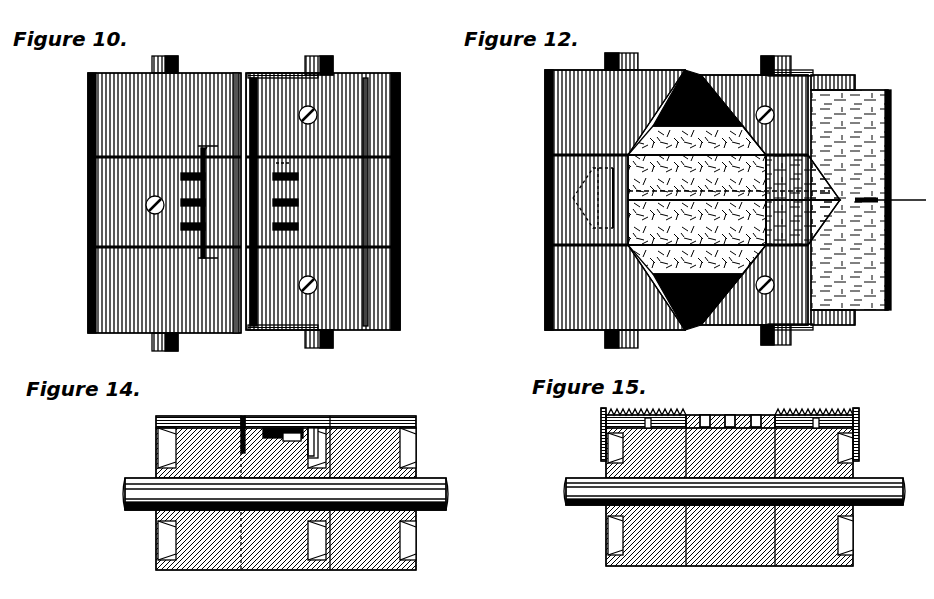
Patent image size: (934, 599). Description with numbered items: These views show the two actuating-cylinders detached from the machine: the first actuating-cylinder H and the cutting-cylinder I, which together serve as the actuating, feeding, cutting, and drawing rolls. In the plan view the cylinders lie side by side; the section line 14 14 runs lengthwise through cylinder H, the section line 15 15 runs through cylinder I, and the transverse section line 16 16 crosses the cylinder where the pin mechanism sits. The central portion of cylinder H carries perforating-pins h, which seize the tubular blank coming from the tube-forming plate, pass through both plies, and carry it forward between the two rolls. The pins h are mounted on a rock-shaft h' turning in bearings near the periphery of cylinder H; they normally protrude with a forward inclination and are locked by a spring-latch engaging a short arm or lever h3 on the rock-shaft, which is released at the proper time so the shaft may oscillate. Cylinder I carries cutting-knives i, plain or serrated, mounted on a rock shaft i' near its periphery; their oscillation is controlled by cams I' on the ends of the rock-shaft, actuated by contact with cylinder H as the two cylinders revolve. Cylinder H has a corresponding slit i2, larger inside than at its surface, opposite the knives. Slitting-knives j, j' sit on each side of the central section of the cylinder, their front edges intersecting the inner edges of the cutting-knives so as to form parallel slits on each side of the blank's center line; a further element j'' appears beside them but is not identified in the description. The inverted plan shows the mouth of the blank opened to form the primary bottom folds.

In FIG. 10, the first actuating-cylinder H is at (164, 203).
In FIG. 12, the first actuating-cylinder H is at (523, 207).
In FIG. 14, the first actuating-cylinder H is at (286, 493).
In FIG. 10, the perforating-pins h is at (176, 202).
In FIG. 12, the perforating-pins h is at (594, 118).
In FIG. 14, the perforating-pins h is at (286, 414).
In FIG. 14, the rock-shaft h' is at (324, 422).
In FIG. 14, the short arm or lever h3 is at (260, 432).
In FIG. 10, the cutting-cylinder I is at (323, 202).
In FIG. 12, the cutting-cylinder I is at (754, 200).
In FIG. 15, the cutting-cylinder I is at (729, 490).
In FIG. 10, the cams I' is at (283, 200).
In FIG. 12, the cams I' is at (811, 199).
In FIG. 15, the cams I' is at (729, 434).
In FIG. 10, the cutting-knives i is at (275, 203).
In FIG. 12, the cutting-knives i is at (851, 200).
In FIG. 15, the cutting-knives i is at (729, 406).
In FIG. 15, the rock shaft i' is at (722, 424).
In FIG. 10, the slit i2 is at (210, 102).
In FIG. 12, the slit i2 is at (588, 115).
In FIG. 14, the slit i2 is at (158, 426).
In FIG. 10, the slitting-knife j is at (295, 206).
In FIG. 12, the slitting-knife j is at (803, 177).
In FIG. 15, the slitting-knife j is at (705, 407).
In FIG. 10, the slitting-knife j' is at (296, 146).
In FIG. 12, the slitting-knife j' is at (803, 127).
In FIG. 15, the slot j'' is at (743, 406).
In FIG. 10, the section line 14 is at (213, 65).
In FIG. 10, the section line 15 is at (262, 65).
In FIG. 14, the section line 16 is at (233, 408).